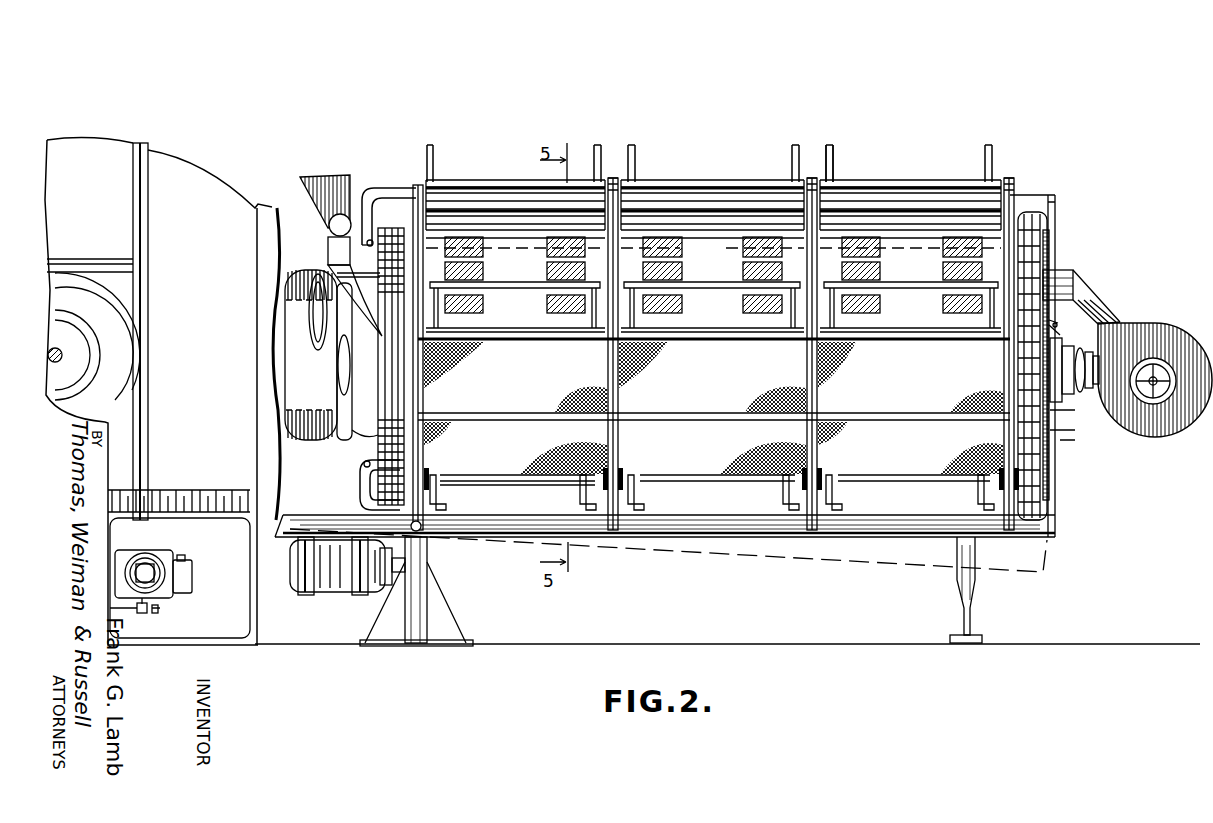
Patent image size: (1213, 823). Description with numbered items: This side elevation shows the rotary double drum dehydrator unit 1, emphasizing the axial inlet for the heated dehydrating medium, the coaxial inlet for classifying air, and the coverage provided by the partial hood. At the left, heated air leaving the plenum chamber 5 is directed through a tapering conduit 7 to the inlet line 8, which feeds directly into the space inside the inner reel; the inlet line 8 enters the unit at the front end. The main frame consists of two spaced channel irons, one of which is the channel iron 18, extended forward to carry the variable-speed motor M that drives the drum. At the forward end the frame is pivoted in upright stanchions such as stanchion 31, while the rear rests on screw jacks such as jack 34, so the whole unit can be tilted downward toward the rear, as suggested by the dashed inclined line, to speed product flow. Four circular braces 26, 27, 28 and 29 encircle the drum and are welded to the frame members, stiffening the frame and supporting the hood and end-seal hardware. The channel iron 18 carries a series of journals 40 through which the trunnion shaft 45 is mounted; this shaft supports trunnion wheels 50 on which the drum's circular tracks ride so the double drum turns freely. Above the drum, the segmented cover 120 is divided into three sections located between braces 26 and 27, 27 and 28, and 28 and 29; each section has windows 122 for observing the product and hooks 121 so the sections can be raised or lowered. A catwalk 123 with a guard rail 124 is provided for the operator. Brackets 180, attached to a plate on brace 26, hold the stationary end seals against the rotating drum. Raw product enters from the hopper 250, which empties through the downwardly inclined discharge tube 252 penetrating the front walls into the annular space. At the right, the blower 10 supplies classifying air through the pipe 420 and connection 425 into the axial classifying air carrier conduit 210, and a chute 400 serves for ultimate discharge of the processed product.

The rotary double drum unit 1 is at (700, 462).
The plenum chamber 5 is at (76, 152).
The tapering conduit 7 is at (265, 203).
The inlet line 8 is at (345, 443).
The outer rotary screen 10 is at (1155, 438).
The channel iron 18 is at (896, 526).
The circular brace 26 is at (415, 184).
The circular brace 27 is at (614, 186).
The circular brace 28 is at (812, 186).
The circular brace 29 is at (1012, 190).
The upright stanchion 31 is at (425, 583).
The screw jack 34 is at (972, 585).
The bearing or journal 40 is at (442, 499).
The trunnion shaft 45 is at (548, 482).
The trunnion wheel 50 is at (430, 474).
The cover or hood 120 is at (724, 251).
The hook 121 is at (834, 152).
The window 122 is at (542, 254).
The catwalk 123 is at (905, 332).
The guard rail 124 is at (898, 284).
The bracket 180 is at (374, 190).
The classifying air carrier conduit 210 is at (1055, 378).
The hopper 250 is at (306, 186).
The discharge tube 252 is at (332, 270).
The chute 400 is at (1064, 276).
The pipe 420 is at (1092, 400).
The connection 425 is at (1118, 322).
The motor M is at (333, 583).